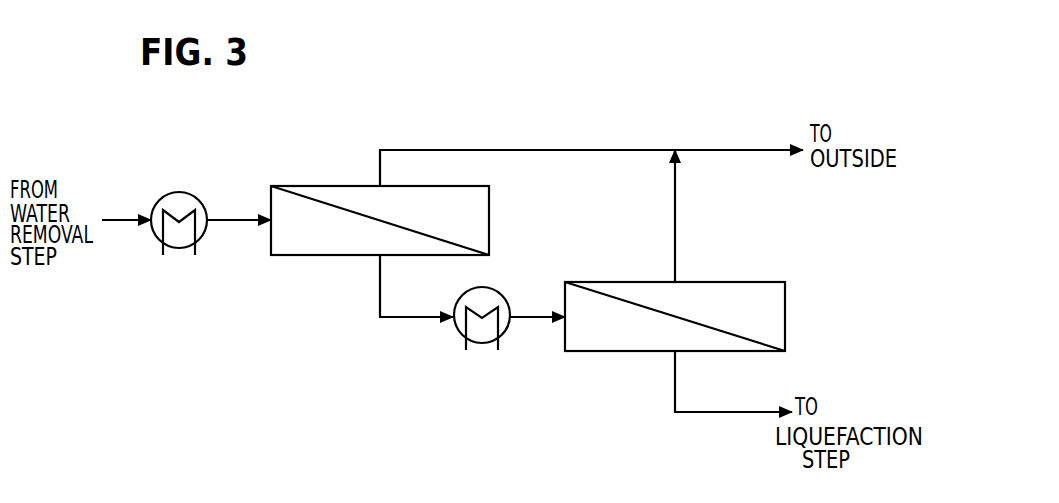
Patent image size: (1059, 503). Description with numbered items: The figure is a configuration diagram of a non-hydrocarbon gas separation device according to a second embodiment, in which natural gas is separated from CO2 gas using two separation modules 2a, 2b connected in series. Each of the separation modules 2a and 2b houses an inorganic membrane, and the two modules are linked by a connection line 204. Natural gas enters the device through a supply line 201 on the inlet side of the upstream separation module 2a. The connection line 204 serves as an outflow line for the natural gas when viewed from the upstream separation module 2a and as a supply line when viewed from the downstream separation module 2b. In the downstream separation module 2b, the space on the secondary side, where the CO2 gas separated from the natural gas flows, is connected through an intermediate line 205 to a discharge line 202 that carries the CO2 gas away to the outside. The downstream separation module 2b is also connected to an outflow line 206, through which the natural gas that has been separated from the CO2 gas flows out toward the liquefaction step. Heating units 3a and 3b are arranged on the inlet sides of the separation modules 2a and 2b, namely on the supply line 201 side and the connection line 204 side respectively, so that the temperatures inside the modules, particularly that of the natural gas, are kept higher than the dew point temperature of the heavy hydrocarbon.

The separation module 2a is at (332, 184).
The separation module 2b is at (615, 280).
The heating unit 3a is at (180, 192).
The heating unit 3b is at (482, 347).
The supply line 201 is at (233, 203).
The discharge line 202 is at (543, 134).
The connection line 204 is at (412, 319).
The intermediate line 205 is at (677, 215).
The outflow line 206 is at (722, 414).